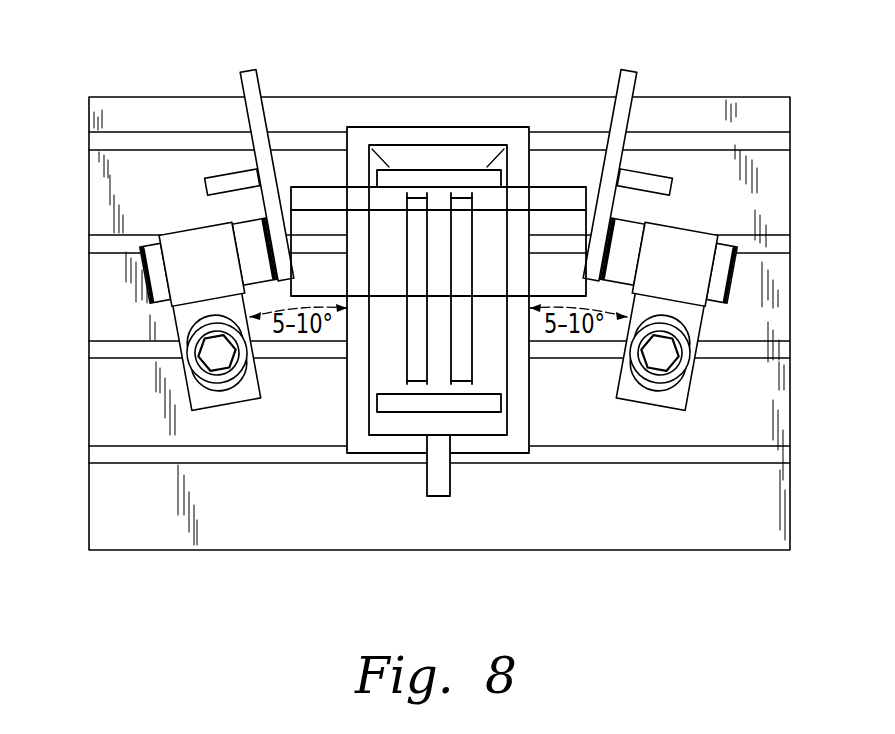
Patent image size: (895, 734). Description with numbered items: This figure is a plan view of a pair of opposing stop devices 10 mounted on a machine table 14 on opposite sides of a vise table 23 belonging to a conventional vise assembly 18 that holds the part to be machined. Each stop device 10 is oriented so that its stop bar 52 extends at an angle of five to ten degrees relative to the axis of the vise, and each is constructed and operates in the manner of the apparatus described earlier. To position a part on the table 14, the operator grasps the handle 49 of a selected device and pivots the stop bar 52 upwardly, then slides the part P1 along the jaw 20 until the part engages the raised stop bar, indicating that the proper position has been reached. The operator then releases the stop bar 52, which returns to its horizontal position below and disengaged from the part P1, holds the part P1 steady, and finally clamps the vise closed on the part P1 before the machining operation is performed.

The stop device 10 is at (173, 320).
The machine table 14 is at (790, 180).
The vise assembly 18 is at (515, 453).
The jaw 20 is at (402, 170).
The vise table 23 is at (508, 127).
The handle 49 is at (203, 188).
The stop bar 52 is at (236, 82).
The part P1 is at (567, 187).